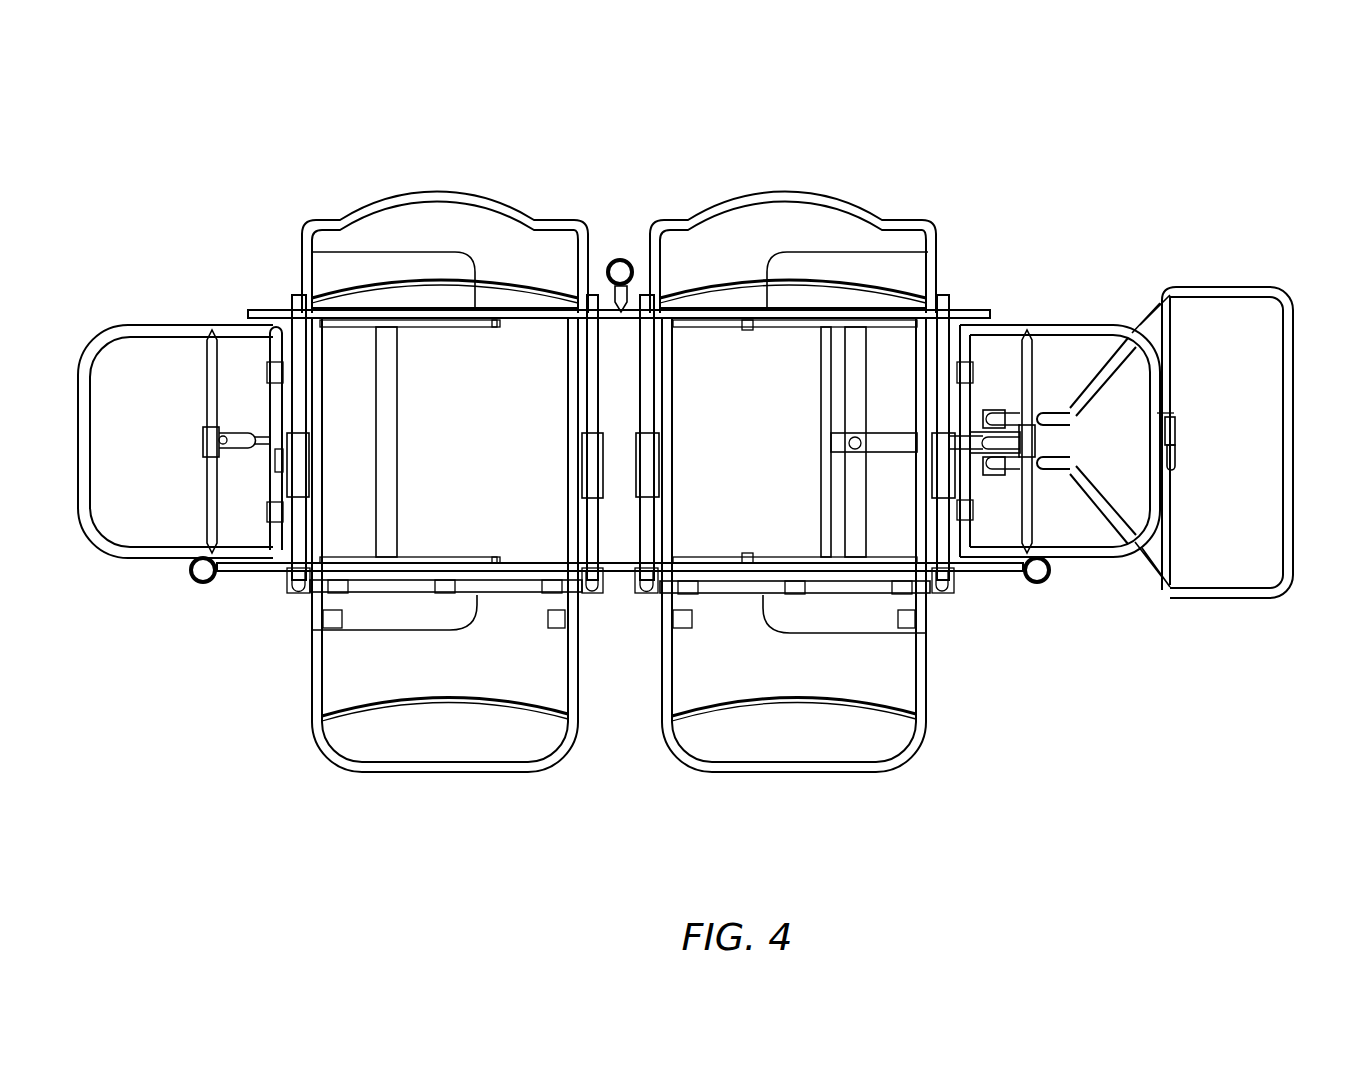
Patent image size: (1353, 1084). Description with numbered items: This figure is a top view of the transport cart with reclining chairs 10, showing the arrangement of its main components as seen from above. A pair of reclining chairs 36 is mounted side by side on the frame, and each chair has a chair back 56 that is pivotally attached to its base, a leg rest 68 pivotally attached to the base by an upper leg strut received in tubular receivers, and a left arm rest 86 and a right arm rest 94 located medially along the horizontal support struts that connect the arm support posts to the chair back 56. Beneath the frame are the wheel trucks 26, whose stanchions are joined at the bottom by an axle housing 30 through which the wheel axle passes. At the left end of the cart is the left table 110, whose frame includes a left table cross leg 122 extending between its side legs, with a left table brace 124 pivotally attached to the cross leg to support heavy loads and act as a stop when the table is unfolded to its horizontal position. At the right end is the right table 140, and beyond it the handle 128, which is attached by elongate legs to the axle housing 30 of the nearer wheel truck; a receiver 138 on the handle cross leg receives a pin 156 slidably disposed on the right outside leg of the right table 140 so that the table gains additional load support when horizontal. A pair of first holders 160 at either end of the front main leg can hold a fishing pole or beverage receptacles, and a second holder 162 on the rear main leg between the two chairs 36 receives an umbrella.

The transport cart with reclining chairs 10 is at (1088, 115).
The wheel trucks 26 is at (815, 628).
The axle housing 30 is at (388, 452).
The reclining chairs 36 is at (477, 168).
The chair back 56 is at (340, 212).
The leg rest 68 is at (316, 756).
The left arm rest 86 is at (298, 466).
The right arm rest 94 is at (590, 473).
The left table 110 is at (160, 323).
The left table cross leg 122 is at (208, 406).
The left table brace 124 is at (236, 450).
The handle 128 is at (1283, 288).
The receiver 138 is at (1180, 437).
The right table 140 is at (1064, 326).
The pin 156 is at (1183, 455).
The first holders 160 is at (193, 577).
The second holder 162 is at (634, 272).